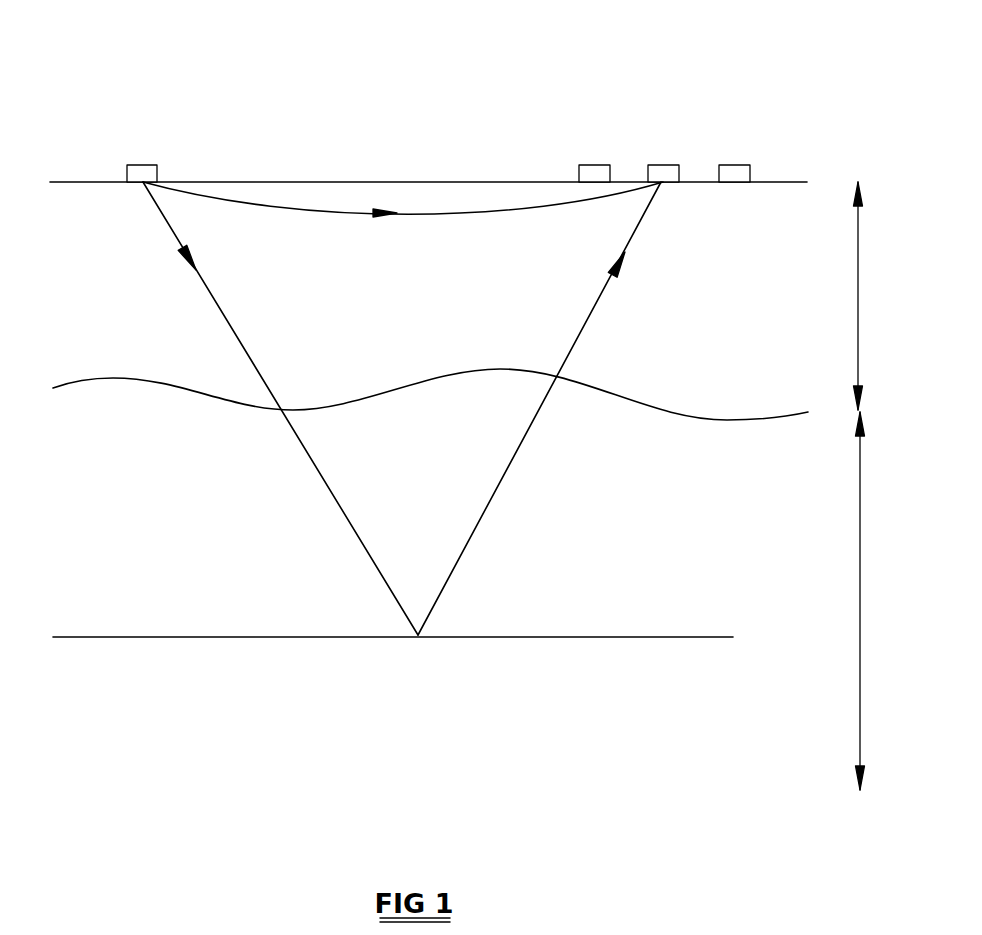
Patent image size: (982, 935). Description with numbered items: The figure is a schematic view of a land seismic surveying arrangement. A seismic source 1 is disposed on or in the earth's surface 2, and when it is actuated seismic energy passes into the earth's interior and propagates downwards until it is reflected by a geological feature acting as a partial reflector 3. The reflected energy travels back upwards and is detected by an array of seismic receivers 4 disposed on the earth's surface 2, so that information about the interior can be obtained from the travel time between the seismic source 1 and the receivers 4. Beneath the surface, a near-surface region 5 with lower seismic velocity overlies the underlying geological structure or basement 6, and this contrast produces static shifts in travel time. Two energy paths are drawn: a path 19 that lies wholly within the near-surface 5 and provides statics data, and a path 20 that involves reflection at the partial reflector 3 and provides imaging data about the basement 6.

The seismic source 1 is at (136, 164).
The earth's surface 2 is at (50, 182).
The partial reflector 3 is at (733, 637).
The seismic receivers 4 is at (592, 166).
The near-surface region 5 is at (875, 296).
The basement 6 is at (876, 601).
The path lying wholly within the near-surface 19 is at (455, 218).
The reflected path 20 is at (503, 483).